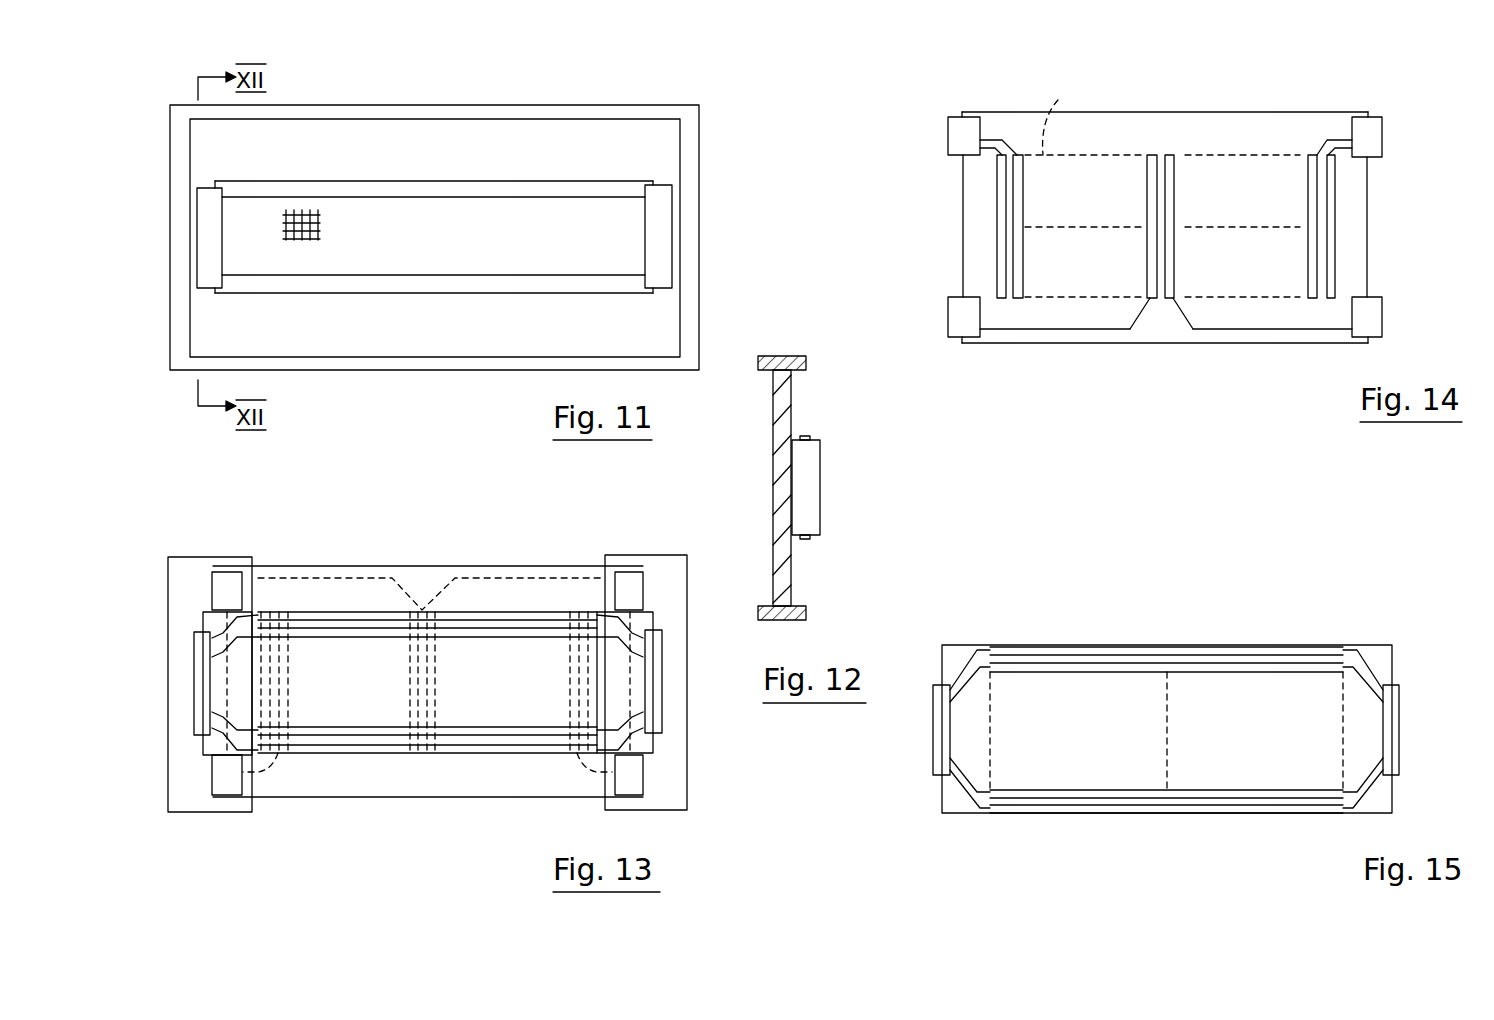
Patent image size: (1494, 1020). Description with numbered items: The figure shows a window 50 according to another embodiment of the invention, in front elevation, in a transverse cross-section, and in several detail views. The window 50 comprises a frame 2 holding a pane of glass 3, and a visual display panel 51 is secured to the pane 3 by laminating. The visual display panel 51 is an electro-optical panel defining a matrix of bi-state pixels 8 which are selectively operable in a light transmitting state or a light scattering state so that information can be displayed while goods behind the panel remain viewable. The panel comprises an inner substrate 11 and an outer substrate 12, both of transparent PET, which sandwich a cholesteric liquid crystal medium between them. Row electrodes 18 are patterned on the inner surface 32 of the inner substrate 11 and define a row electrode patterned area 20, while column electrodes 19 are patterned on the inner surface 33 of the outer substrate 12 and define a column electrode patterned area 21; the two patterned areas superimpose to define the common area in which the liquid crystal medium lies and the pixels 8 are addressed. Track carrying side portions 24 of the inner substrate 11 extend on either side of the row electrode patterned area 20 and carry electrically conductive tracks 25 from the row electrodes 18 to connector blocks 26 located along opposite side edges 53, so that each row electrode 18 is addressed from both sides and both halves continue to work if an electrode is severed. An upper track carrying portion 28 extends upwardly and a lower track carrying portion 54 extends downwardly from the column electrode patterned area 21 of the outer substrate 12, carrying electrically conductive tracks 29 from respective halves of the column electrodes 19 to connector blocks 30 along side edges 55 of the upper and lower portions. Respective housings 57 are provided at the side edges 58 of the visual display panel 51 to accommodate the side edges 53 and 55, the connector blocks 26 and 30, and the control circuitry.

In FIG. 11, the frame 2 is at (695, 320).
In FIG. 12, the frame 2 is at (795, 354).
In FIG. 11, the pane of glass 3 is at (425, 133).
In FIG. 12, the pane of glass 3 is at (777, 396).
In FIG. 11, the bi-state pixels 8 is at (305, 226).
In FIG. 13, the inner substrate 11 is at (640, 740).
In FIG. 15, the inner substrate 11 is at (1215, 775).
In FIG. 13, the outer substrate 12 is at (440, 568).
In FIG. 14, the outer substrate 12 is at (1262, 123).
In FIG. 13, the row electrodes 18 is at (478, 642).
In FIG. 15, the row electrodes 18 is at (1160, 643).
In FIG. 13, the column electrodes 19 is at (442, 698).
In FIG. 14, the column electrodes 19 is at (1000, 222).
In FIG. 15, the row electrode patterned area 20 is at (1343, 735).
In FIG. 14, the column electrode patterned area 21 is at (1058, 100).
In FIG. 13, the track carrying side portions 24 is at (208, 745).
In FIG. 15, the track carrying side portions 24 is at (960, 805).
In FIG. 15, the electrically conductive tracks 25 is at (960, 672).
In FIG. 13, the connector blocks 26 is at (197, 645).
In FIG. 15, the connector blocks 26 is at (935, 725).
In FIG. 14, the upper track carrying portion 28 is at (1153, 123).
In FIG. 14, the electrically conductive tracks 29 is at (1143, 318).
In FIG. 14, the connector blocks 30 is at (967, 128).
In FIG. 15, the inner surface 32 is at (1105, 775).
In FIG. 14, the inner surface 33 is at (1070, 280).
In FIG. 11, the window 50 is at (718, 120).
In FIG. 12, the window 50 is at (762, 458).
In FIG. 11, the visual display panel 51 is at (513, 165).
In FIG. 12, the visual display panel 51 is at (855, 470).
In FIG. 13, the side edges 53 is at (200, 622).
In FIG. 15, the side edges 53 is at (945, 812).
In FIG. 13, the lower track carrying portion 54 is at (395, 788).
In FIG. 14, the lower track carrying portion 54 is at (1278, 318).
In FIG. 13, the side edges 55 is at (222, 573).
In FIG. 14, the side edges 55 is at (960, 186).
In FIG. 11, the housings 57 is at (210, 233).
In FIG. 12, the housings 57 is at (808, 458).
In FIG. 13, the housings 57 is at (185, 812).
In FIG. 13, the side edges 58 is at (190, 664).